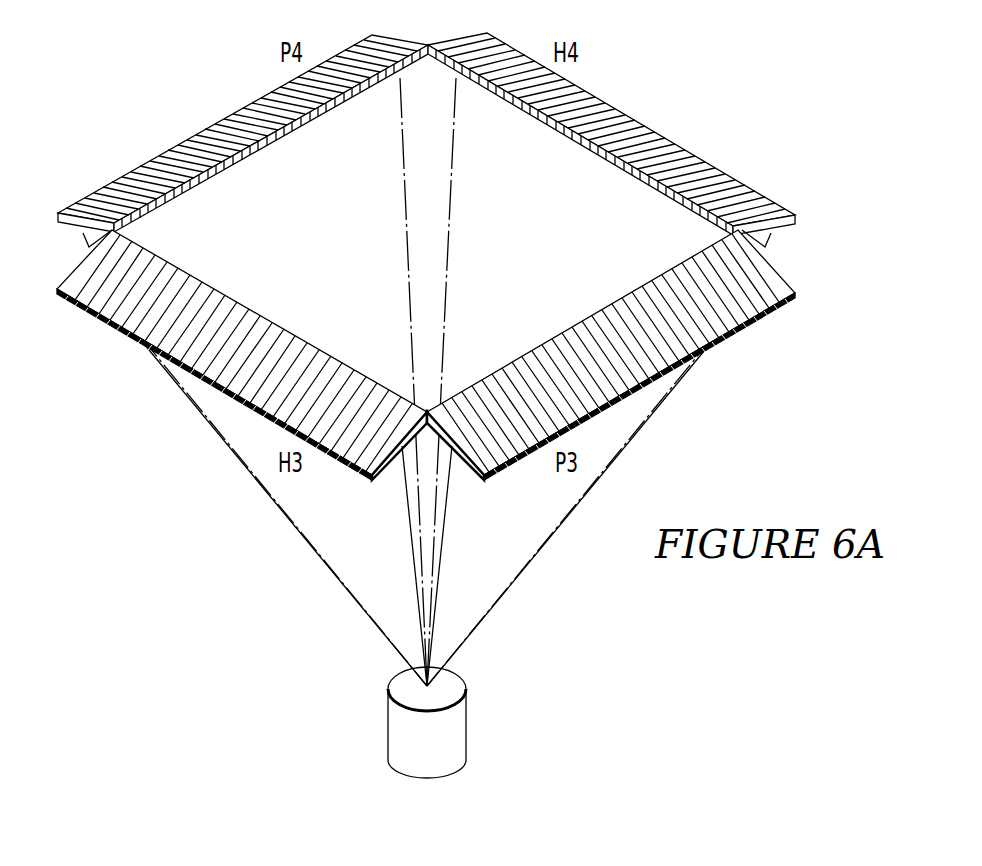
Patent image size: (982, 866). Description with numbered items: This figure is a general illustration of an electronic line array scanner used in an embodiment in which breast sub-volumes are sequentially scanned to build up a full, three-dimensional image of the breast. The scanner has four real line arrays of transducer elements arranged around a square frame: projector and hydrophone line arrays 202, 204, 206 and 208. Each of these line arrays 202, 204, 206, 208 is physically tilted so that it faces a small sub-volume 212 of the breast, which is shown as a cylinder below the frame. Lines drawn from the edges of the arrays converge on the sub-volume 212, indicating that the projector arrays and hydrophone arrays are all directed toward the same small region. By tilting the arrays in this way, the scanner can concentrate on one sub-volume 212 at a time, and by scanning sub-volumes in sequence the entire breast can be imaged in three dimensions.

The projector line array 202 is at (742, 326).
The projector line array 204 is at (177, 144).
The hydrophone line array 206 is at (115, 326).
The hydrophone line array 208 is at (682, 147).
The breast sub-volume 212 is at (395, 743).